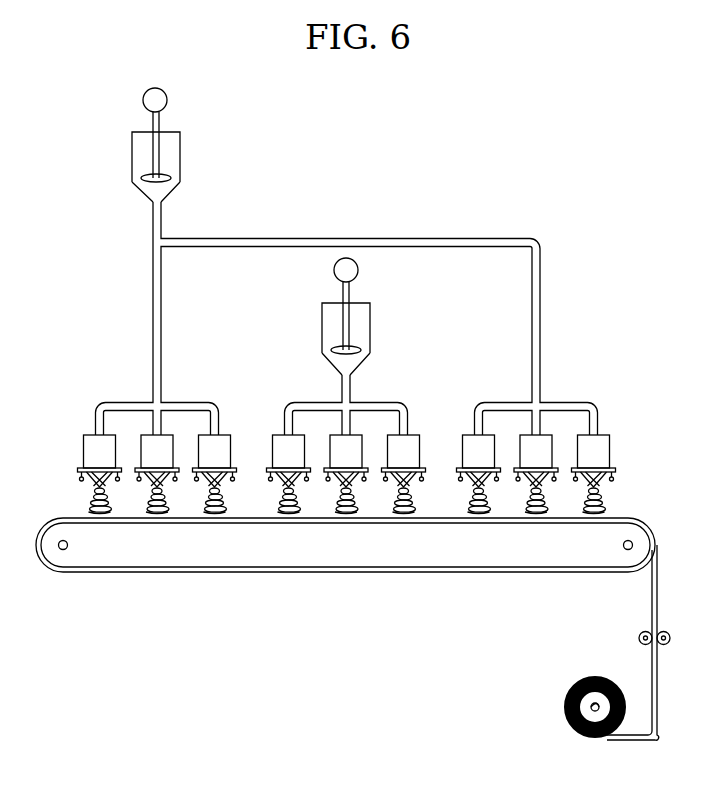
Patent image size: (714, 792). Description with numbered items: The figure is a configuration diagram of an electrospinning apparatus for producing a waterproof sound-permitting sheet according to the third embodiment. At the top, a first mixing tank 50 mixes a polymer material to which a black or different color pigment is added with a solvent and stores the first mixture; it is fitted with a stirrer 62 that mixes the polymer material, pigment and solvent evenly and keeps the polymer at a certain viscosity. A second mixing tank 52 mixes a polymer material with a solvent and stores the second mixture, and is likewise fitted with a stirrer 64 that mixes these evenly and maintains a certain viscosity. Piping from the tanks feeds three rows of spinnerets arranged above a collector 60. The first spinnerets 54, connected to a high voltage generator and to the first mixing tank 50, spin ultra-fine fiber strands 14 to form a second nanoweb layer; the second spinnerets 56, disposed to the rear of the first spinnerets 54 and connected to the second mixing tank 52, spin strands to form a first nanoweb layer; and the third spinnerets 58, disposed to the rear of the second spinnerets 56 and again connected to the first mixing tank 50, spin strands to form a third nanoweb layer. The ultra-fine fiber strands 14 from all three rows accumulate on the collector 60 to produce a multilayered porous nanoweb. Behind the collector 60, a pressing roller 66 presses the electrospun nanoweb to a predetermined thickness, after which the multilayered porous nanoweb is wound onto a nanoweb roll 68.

The ultra-fine fiber strands 14 is at (605, 505).
The first mixing tank 50 is at (165, 152).
The second mixing tank 52 is at (355, 322).
The first spinnerets 54 is at (83, 448).
The second spinnerets 56 is at (272, 448).
The third spinnerets 58 is at (462, 448).
The collector 60 is at (201, 571).
The stirrer 62 is at (171, 180).
The stirrer 64 is at (361, 352).
The pressing roller 66 is at (638, 636).
The nanoweb roll 68 is at (573, 694).